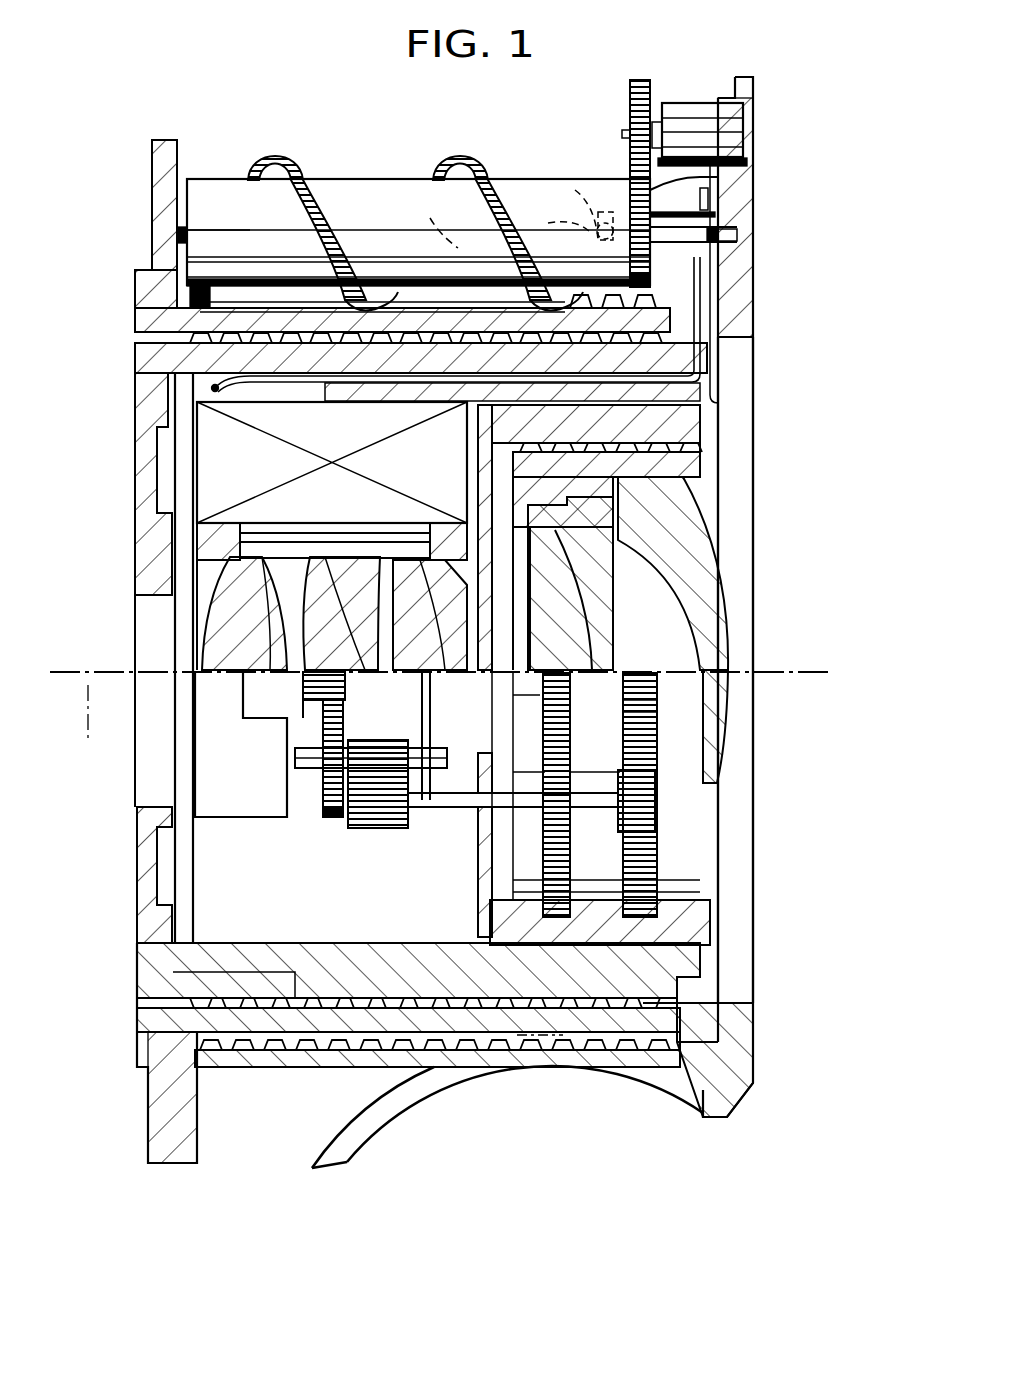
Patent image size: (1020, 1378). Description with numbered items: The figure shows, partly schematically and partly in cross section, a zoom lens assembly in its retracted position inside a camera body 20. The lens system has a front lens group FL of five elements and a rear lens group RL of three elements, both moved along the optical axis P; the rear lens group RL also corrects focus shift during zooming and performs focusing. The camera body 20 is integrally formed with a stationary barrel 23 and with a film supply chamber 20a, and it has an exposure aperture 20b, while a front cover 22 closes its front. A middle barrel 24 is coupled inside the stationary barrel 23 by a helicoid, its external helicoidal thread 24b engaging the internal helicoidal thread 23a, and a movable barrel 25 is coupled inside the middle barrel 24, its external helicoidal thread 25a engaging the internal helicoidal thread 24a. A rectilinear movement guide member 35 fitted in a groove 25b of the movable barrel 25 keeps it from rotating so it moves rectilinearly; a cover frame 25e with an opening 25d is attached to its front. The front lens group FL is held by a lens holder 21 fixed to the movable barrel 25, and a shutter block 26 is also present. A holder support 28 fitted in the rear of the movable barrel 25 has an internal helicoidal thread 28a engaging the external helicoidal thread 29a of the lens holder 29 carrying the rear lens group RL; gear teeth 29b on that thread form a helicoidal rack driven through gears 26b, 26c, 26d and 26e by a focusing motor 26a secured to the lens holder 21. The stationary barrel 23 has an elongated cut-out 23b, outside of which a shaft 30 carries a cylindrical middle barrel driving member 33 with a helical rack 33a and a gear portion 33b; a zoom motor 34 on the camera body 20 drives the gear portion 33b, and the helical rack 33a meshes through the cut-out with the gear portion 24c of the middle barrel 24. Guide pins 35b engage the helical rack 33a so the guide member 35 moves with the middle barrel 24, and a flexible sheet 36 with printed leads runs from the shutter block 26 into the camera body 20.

The camera body 20 is at (760, 1052).
The film supply chamber 20a is at (365, 1150).
The exposure aperture 20b is at (737, 805).
The lens holder 21 is at (333, 540).
The front cover 22 is at (150, 1108).
The stationary barrel 23 is at (255, 1070).
The internal helicoidal thread 23a is at (475, 1072).
The elongated cut-out 23b is at (247, 280).
The middle barrel 24 is at (350, 982).
The internal helicoidal thread 24a is at (488, 1045).
The external helicoidal thread 24b is at (650, 1045).
The gear portion 24c is at (555, 1102).
The movable barrel 25 is at (238, 940).
The external helicoidal thread 25a is at (638, 1012).
The groove 25b is at (315, 392).
The opening 25d is at (205, 560).
The cover frame 25e is at (150, 388).
The shutter block 26 is at (192, 467).
The focusing motor 26a is at (260, 720).
The gear 26b is at (348, 688).
The gear 26c is at (325, 785).
The gear 26d is at (380, 830).
The gear 26e is at (618, 778).
The holder support 28 is at (700, 432).
The internal helicoidal thread 28a is at (670, 918).
The lens holder 29 is at (700, 464).
The external helicoidal thread 29a is at (655, 865).
The gear teeth 29b is at (640, 710).
The shaft 30 is at (740, 233).
The middle barrel driving member 33 is at (375, 172).
The helical rack 33a is at (283, 160).
The gear portion 33b is at (722, 184).
The zoom motor 34 is at (728, 140).
The rectilinear movement guide member 35 is at (722, 383).
The guide pins 35b is at (606, 185).
The flexible sheet 36 is at (247, 395).
The front lens group FL is at (188, 605).
The rear lens group RL is at (748, 588).
The optical axis P is at (440, 729).